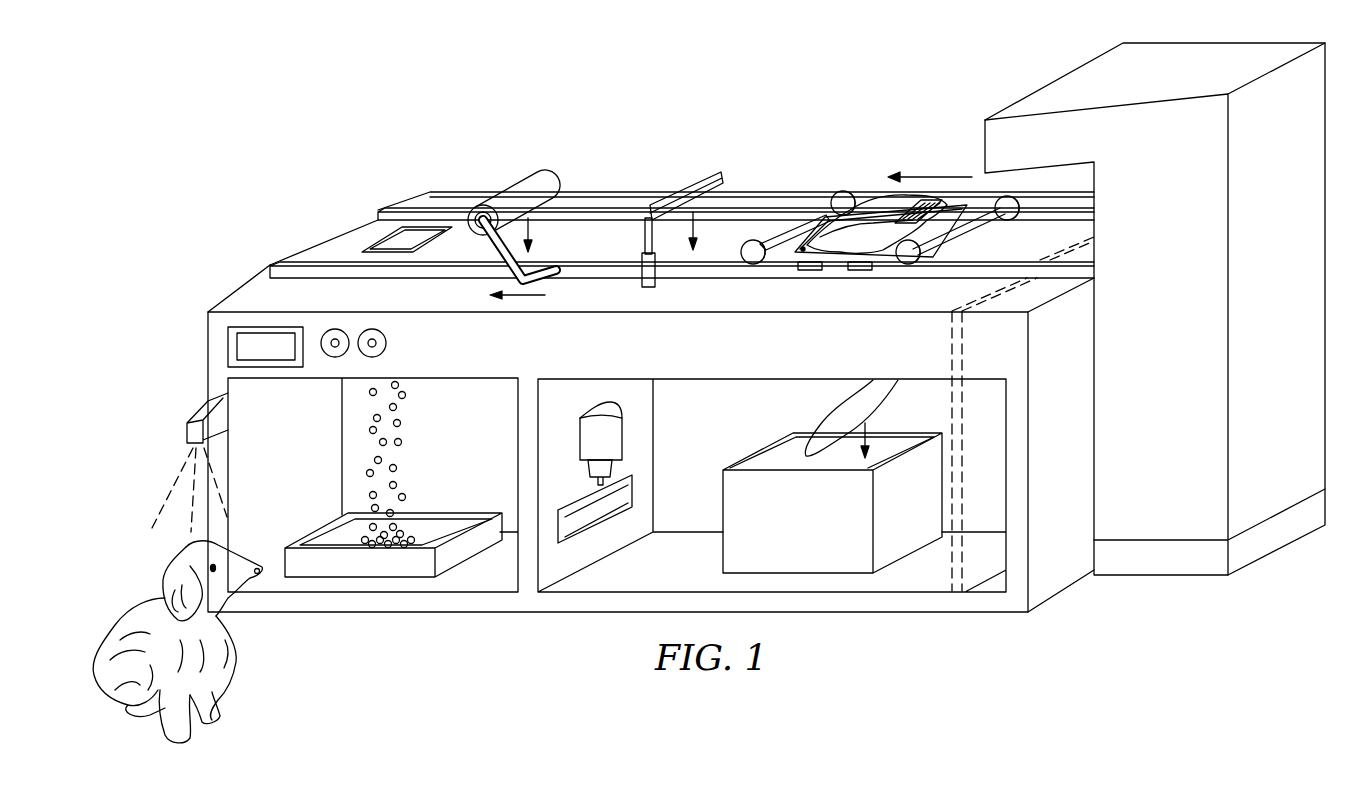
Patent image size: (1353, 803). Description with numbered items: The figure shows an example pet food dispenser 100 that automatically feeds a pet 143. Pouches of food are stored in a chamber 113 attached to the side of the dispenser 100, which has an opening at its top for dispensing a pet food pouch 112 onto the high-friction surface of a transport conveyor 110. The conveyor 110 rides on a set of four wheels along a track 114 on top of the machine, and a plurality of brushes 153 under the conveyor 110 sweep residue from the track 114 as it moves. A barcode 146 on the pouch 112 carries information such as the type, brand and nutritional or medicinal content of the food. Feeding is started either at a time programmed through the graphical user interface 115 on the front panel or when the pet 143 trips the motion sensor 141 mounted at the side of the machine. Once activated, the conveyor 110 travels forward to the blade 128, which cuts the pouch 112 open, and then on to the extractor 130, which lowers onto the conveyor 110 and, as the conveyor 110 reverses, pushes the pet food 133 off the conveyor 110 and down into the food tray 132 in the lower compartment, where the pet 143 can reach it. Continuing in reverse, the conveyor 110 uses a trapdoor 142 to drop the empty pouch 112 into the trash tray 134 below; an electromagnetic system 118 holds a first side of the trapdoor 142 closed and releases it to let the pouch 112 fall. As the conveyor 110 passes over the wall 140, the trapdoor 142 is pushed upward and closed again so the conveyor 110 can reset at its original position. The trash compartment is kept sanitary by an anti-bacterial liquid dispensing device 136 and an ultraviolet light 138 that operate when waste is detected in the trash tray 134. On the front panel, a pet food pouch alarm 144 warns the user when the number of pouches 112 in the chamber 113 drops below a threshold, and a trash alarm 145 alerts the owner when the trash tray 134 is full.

The pet food dispenser 100 is at (420, 67).
The transport conveyor 110 is at (948, 223).
The pet food pouch 112 is at (893, 200).
The chamber 113 is at (1012, 101).
The track 114 is at (387, 203).
The graphical user interface 115 is at (245, 342).
The electromagnetic system 118 is at (790, 226).
The blade 128 is at (704, 180).
The extractor 130 is at (523, 179).
The food tray 132 is at (320, 526).
The pet food 133 is at (408, 423).
The trash tray 134 is at (741, 553).
The anti-bacterial liquid dispensing device 136 is at (620, 432).
The ultraviolet light 138 is at (628, 497).
The wall 140 is at (948, 340).
The motion sensor 141 is at (197, 408).
The trapdoor 142 is at (802, 248).
The pet 143 is at (163, 572).
The pet food pouch alarm 144 is at (347, 353).
The trash alarm 145 is at (378, 338).
The barcode 146 is at (923, 222).
The brushes 153 is at (808, 272).